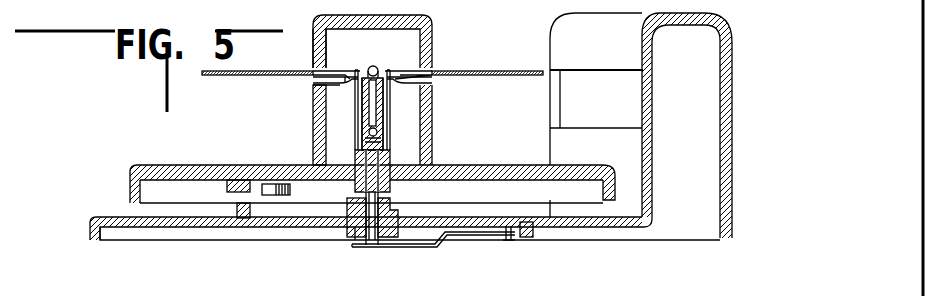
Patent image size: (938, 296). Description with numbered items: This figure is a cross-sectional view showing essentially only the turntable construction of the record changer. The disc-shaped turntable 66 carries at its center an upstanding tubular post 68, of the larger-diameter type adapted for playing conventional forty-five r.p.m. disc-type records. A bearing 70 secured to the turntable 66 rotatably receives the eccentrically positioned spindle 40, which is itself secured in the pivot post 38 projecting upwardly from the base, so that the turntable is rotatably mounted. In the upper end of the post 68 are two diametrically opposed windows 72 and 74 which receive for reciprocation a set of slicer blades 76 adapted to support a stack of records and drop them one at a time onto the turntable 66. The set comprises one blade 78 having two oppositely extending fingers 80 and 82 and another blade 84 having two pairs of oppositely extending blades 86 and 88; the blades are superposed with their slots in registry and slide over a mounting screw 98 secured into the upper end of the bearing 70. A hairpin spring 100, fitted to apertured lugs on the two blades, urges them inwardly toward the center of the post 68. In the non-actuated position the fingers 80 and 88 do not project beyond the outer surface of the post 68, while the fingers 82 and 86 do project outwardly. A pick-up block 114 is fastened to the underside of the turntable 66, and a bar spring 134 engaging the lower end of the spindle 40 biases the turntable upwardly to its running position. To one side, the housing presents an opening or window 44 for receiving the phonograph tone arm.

The pivot post 38 is at (392, 199).
The spindle 40 is at (388, 153).
The opening or window 44 is at (589, 128).
The turntable 66 is at (512, 164).
The tubular post 68 is at (313, 124).
The bearing 70 is at (386, 110).
The window 72 is at (318, 41).
The window 74 is at (430, 37).
The slicer blades 76 is at (400, 71).
The blade 78 is at (345, 89).
The finger 80 is at (320, 82).
The finger 82 is at (432, 74).
The blade 84 is at (344, 67).
The blades 86 is at (313, 76).
The blades 88 is at (432, 82).
The mounting screw 98 is at (377, 67).
The hairpin spring 100 is at (357, 150).
The pick-up block 114 is at (290, 190).
The bar spring 134 is at (403, 247).